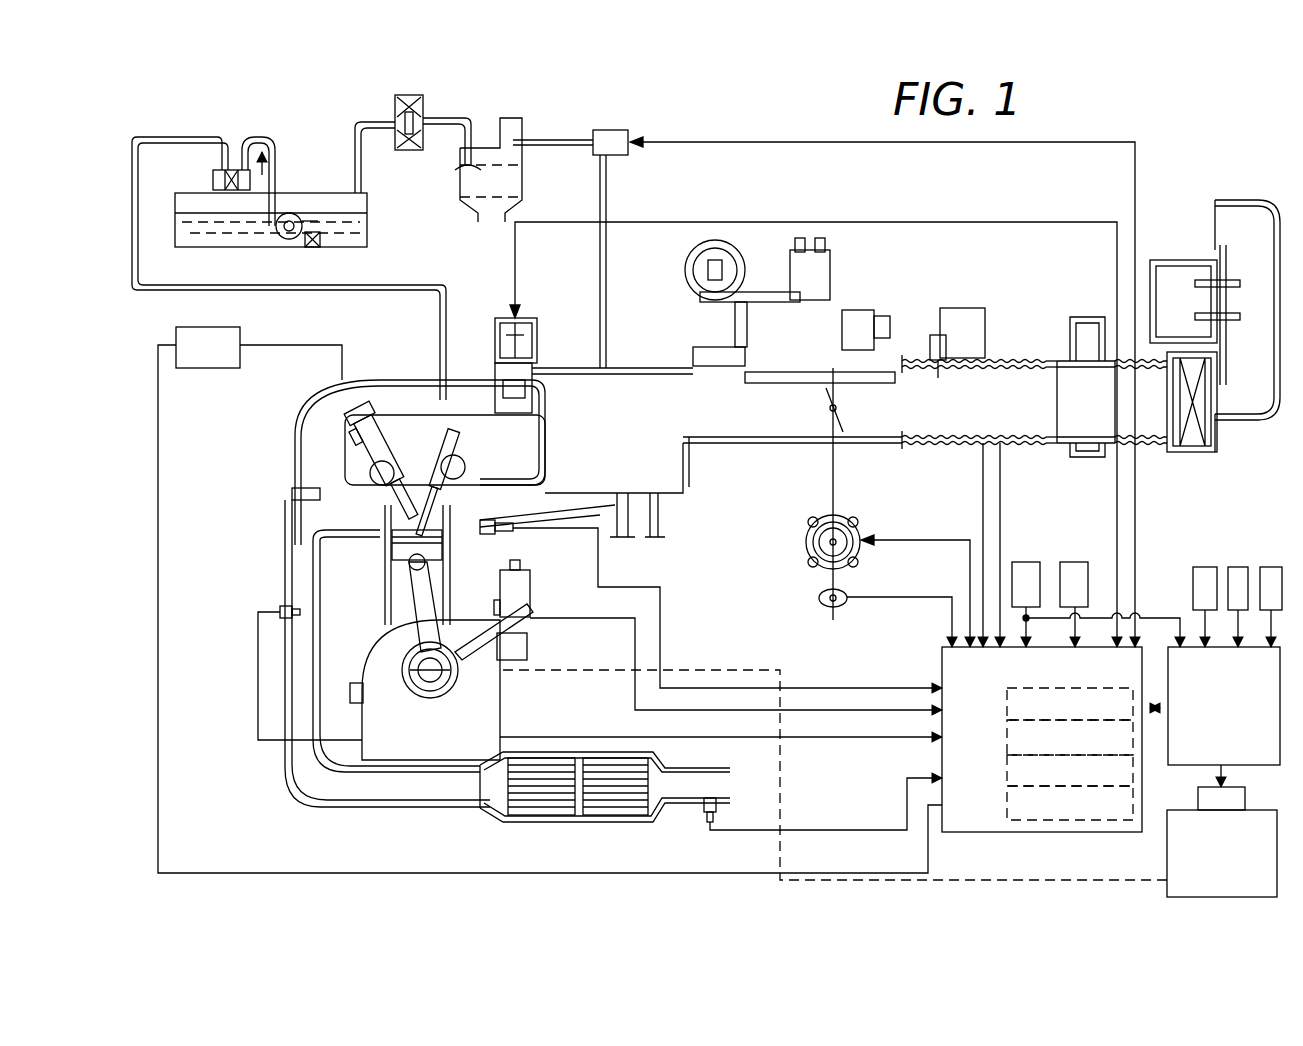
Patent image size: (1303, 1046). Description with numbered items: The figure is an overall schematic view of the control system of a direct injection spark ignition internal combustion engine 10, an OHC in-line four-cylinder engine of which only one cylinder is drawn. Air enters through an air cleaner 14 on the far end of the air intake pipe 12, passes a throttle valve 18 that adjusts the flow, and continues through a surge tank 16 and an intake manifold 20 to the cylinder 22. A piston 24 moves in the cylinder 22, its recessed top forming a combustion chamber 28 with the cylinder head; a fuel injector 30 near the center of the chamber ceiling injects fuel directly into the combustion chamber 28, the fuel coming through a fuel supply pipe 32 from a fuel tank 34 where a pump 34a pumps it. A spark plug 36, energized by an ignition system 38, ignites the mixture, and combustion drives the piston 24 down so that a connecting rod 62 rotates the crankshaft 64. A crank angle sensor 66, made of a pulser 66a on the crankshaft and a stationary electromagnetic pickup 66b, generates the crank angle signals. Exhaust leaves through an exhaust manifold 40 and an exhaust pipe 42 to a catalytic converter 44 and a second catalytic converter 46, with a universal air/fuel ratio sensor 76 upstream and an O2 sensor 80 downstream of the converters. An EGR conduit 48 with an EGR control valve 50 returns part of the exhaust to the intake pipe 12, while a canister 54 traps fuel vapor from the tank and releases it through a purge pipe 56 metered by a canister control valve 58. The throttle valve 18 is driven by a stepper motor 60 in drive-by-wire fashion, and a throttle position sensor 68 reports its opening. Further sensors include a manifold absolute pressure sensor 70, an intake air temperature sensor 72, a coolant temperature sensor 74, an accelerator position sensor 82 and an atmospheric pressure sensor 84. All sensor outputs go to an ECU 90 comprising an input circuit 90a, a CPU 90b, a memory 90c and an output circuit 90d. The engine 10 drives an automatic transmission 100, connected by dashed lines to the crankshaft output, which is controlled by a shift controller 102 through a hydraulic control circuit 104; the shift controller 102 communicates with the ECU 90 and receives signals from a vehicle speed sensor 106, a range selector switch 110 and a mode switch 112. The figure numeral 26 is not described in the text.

The internal combustion engine 10 is at (694, 556).
The air intake pipe 12 is at (746, 446).
The air cleaner 14 is at (1192, 440).
The surge tank 16 is at (1088, 420).
The throttle valve 18 is at (826, 392).
The intake manifold 20 is at (482, 480).
The cylinder 22 is at (402, 592).
The piston 24 is at (395, 562).
The intake camshaft 26 is at (370, 473).
The combustion chamber 28 is at (400, 535).
The fuel injector 30 is at (465, 467).
The fuel supply pipe 32 is at (384, 290).
The fuel tank 34 is at (316, 193).
The pump 34a is at (283, 242).
The spark plug 36 is at (362, 420).
The ignition system 38 is at (197, 368).
The exhaust manifold 40 is at (292, 496).
The exhaust pipe 42 is at (306, 780).
The catalytic converter 44 is at (553, 815).
The second catalytic converter 46 is at (628, 815).
The EGR conduit 48 is at (378, 379).
The EGR control valve 50 is at (537, 385).
The canister 54 is at (460, 185).
The purge pipe 56 is at (600, 190).
The canister control valve 58 is at (628, 131).
The stepper motor 60 is at (862, 549).
The connecting rod 62 is at (320, 625).
The crankshaft 64 is at (418, 667).
The crank angle sensor 66 is at (470, 676).
The pulser 66a is at (448, 700).
The electromagnetic pickup 66b is at (500, 670).
The throttle position sensor 68 is at (833, 612).
The manifold absolute pressure sensor 70 is at (856, 326).
The intake air temperature sensor 72 is at (936, 336).
The coolant temperature sensor 74 is at (505, 535).
The universal air/fuel ratio sensor 76 is at (282, 608).
The O2 sensor 80 is at (704, 812).
The accelerator position sensor 82 is at (1027, 562).
The atmospheric pressure sensor 84 is at (1074, 562).
The ECU 90 is at (942, 772).
The input circuit 90a is at (1007, 695).
The CPU 90b is at (1007, 733).
The memory 90c is at (1007, 771).
The output circuit 90d is at (1007, 800).
The automatic transmission 100 is at (1167, 852).
The shift controller 102 is at (1185, 765).
The hydraulic control circuit 104 is at (1245, 797).
The vehicle speed sensor 106 is at (1204, 567).
The range selector switch 110 is at (1238, 567).
The mode switch 112 is at (1271, 567).